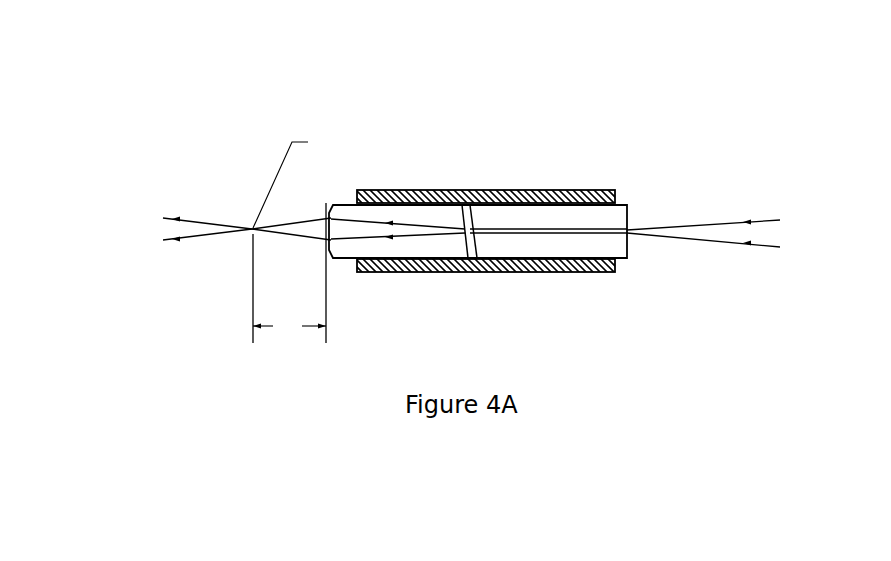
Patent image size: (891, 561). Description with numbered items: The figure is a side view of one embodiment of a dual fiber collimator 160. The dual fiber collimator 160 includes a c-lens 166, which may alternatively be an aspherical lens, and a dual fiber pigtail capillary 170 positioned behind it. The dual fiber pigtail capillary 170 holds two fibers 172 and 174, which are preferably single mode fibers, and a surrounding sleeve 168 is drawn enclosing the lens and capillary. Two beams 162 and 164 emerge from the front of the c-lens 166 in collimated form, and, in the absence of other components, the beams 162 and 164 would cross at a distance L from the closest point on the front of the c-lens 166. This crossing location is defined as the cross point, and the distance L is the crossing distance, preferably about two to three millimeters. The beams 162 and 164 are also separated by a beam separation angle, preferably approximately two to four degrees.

The dual fiber collimator 160 is at (488, 48).
The beam 162 is at (208, 220).
The beam 164 is at (225, 237).
The c-lens 166 is at (332, 205).
The glass tube sleeve 168 is at (545, 190).
The dual fiber pigtail capillary 170 is at (628, 245).
The fiber 172 is at (673, 228).
The fiber 174 is at (700, 237).